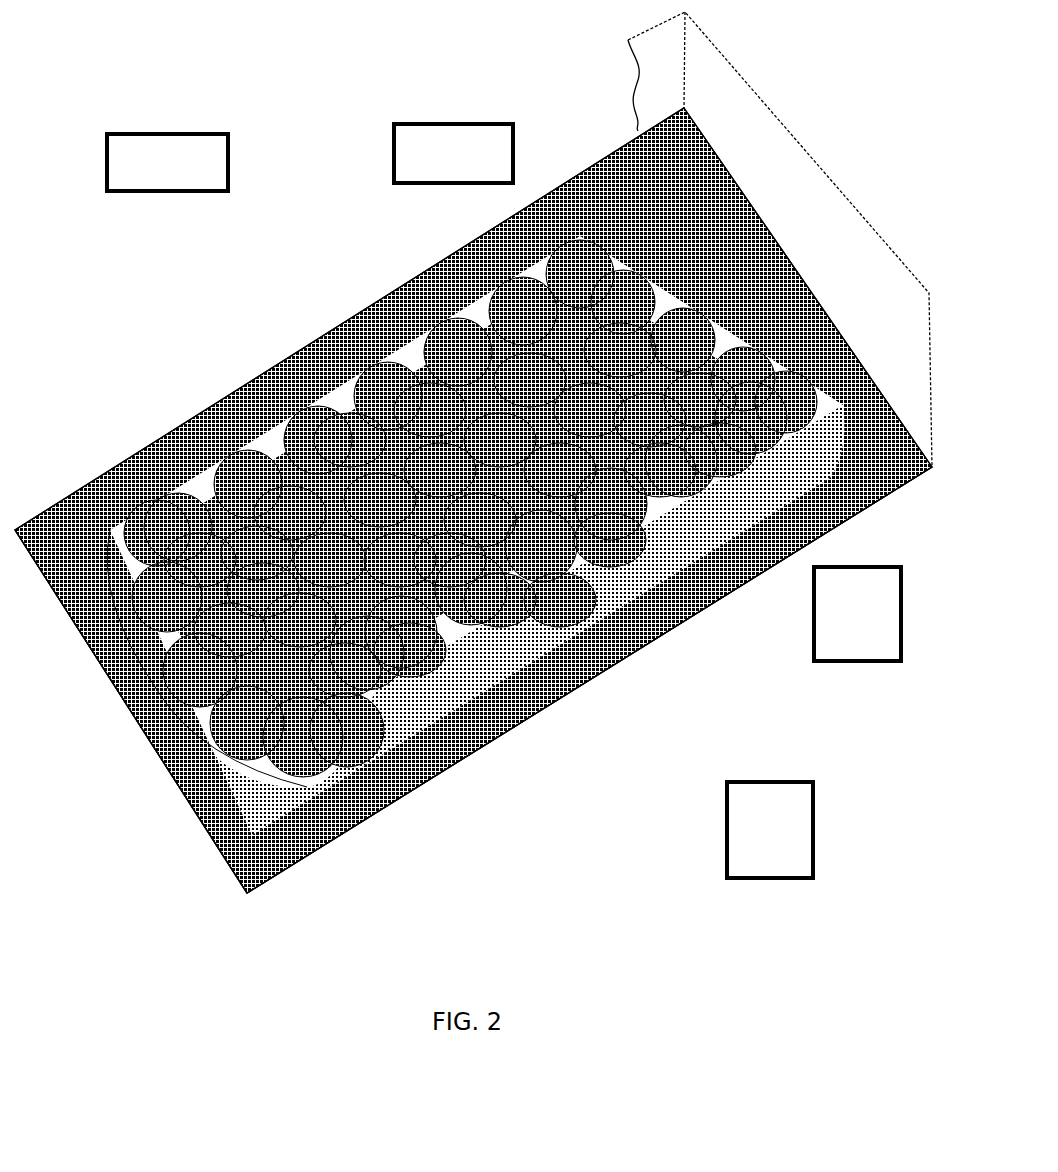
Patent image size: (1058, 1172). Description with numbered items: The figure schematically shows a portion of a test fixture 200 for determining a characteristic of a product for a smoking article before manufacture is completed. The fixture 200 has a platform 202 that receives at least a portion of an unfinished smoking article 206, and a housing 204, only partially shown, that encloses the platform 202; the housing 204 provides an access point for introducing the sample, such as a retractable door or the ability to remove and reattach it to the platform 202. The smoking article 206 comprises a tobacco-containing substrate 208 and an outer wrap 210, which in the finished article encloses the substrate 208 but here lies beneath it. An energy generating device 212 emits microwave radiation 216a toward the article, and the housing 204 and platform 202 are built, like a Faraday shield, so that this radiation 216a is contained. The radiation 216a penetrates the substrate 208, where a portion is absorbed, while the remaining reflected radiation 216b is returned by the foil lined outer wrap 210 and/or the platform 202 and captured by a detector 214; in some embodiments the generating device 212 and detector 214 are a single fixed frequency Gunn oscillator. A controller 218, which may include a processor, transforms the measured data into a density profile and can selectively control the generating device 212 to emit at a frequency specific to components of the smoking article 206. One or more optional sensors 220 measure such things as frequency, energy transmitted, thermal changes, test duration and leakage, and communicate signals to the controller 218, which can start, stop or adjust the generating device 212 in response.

The test fixture 200 is at (155, 108).
The platform 202 is at (357, 302).
The housing 204 is at (793, 122).
The smoking article 206 is at (325, 333).
The substrate 208 is at (582, 258).
The outer wrap 210 is at (243, 780).
The energy generating device 212 is at (413, 565).
The detector 214 is at (286, 470).
The electromagnetic radiation 216a is at (172, 312).
The reflected radiation 216b is at (520, 455).
The controller 218 is at (760, 882).
The sensors 220 is at (865, 665).